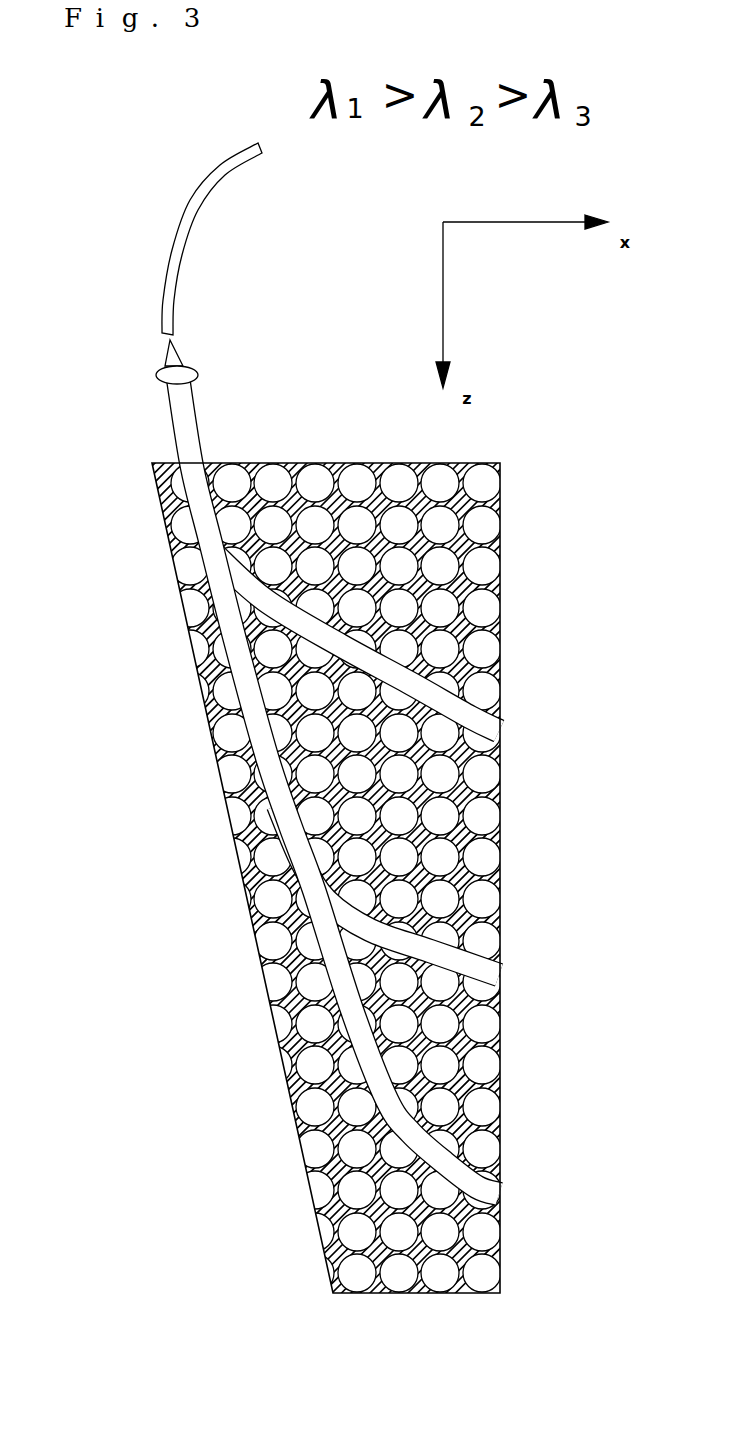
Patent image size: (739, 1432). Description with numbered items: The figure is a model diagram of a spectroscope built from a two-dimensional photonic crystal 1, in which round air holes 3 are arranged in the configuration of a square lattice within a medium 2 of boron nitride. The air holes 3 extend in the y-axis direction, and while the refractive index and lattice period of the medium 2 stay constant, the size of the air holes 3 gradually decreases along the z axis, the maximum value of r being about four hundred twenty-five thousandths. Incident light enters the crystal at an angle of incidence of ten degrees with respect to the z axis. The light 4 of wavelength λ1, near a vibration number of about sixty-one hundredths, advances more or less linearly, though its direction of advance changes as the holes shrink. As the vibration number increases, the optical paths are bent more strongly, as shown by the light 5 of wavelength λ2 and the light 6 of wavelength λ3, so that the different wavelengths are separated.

The photonic crystal 1 is at (308, 428).
The medium 2 is at (500, 542).
The air holes 3 is at (483, 483).
The light 4 is at (486, 1170).
The light 5 is at (498, 937).
The light 6 is at (500, 665).